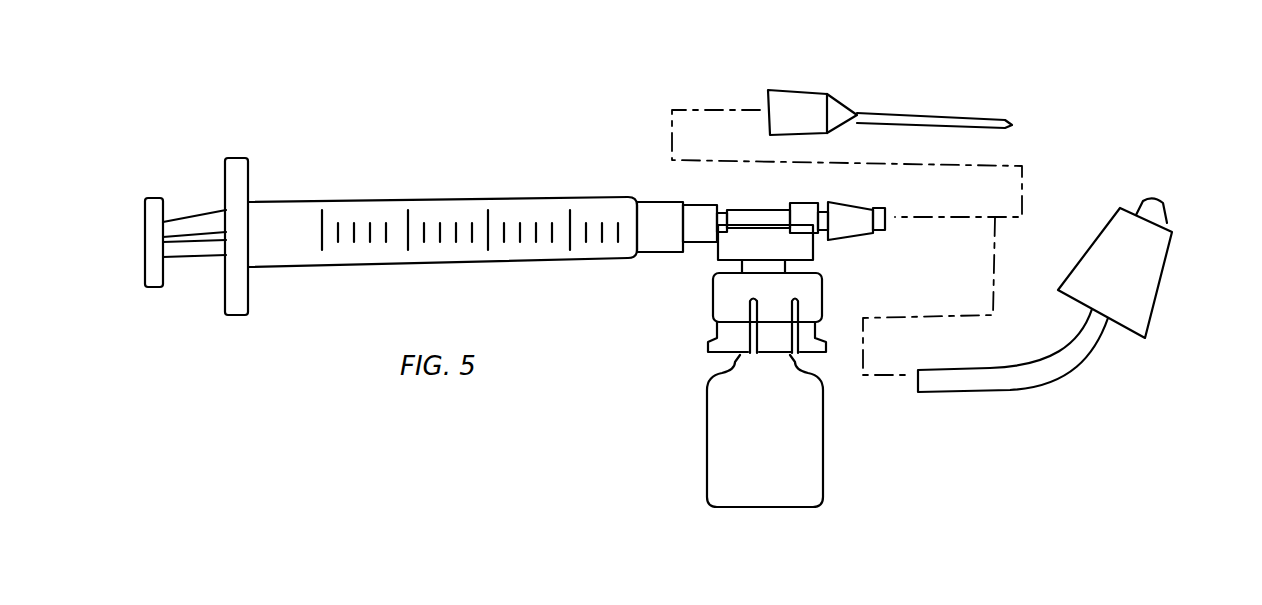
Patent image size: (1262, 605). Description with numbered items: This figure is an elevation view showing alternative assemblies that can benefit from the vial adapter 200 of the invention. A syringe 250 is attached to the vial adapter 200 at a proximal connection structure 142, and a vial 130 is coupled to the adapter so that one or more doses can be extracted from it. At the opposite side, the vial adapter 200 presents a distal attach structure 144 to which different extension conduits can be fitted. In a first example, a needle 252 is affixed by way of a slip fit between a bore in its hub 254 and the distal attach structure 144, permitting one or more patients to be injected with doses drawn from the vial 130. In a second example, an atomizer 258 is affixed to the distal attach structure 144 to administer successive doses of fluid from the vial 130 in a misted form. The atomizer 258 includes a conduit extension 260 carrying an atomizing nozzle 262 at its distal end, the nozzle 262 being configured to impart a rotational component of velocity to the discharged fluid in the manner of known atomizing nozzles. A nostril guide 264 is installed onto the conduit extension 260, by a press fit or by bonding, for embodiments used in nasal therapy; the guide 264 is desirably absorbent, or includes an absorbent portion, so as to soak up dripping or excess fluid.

The syringe 250 is at (365, 210).
The proximal connection structure 142 is at (672, 186).
The distal attach structure 144 is at (861, 251).
The vial adapter 200 is at (692, 282).
The vial 130 is at (808, 462).
The needle 252 is at (847, 122).
The hub 254 is at (790, 100).
The atomizer 258 is at (1055, 312).
The conduit extension 260 is at (978, 382).
The atomizing nozzle 262 is at (1158, 202).
The nostril guide 264 is at (1147, 282).